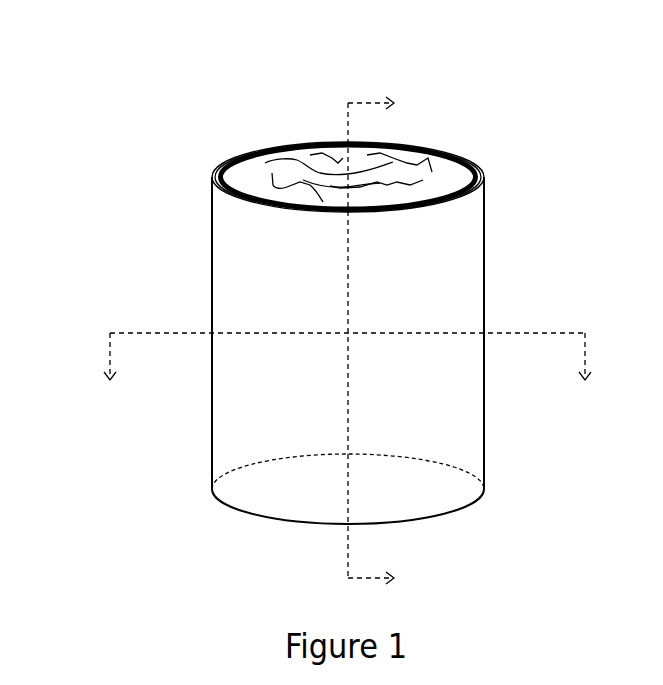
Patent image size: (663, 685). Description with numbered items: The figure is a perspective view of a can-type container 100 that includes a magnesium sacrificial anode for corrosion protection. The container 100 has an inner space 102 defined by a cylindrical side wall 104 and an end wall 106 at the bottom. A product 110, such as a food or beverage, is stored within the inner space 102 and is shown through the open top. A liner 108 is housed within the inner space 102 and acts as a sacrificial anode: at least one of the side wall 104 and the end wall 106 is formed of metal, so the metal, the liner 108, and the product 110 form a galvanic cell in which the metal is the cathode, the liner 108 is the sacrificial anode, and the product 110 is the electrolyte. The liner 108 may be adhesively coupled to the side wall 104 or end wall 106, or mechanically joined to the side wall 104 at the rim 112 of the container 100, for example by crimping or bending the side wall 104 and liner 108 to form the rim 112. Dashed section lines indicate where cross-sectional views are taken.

The container 100 is at (323, 305).
The inner space 102 is at (256, 172).
The side wall 104 is at (484, 430).
The end wall 106 is at (448, 513).
The liner 108 is at (473, 162).
The product 110 is at (417, 163).
The rim 112 is at (483, 183).